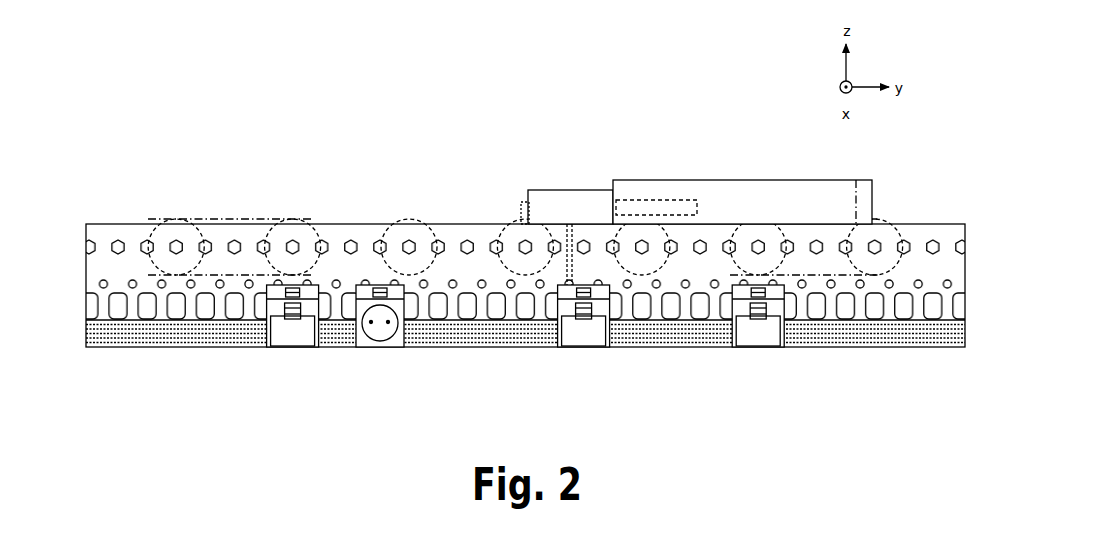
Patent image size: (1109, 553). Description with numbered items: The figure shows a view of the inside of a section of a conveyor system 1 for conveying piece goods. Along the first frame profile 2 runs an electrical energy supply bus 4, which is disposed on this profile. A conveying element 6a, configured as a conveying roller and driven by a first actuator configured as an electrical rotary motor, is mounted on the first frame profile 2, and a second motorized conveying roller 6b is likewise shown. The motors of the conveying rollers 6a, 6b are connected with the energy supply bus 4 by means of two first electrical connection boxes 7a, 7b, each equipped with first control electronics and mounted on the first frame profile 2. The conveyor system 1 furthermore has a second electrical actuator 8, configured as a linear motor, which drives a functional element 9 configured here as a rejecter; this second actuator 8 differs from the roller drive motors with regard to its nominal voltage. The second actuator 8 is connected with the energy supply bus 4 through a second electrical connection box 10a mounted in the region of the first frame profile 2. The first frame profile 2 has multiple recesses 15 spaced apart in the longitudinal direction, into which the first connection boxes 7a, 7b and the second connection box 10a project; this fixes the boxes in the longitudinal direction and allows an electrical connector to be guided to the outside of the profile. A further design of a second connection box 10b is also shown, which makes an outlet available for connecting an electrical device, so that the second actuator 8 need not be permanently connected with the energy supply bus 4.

The conveyor system 1 is at (180, 153).
The first frame profile 2 is at (128, 228).
The electrical energy supply bus 4 is at (152, 333).
The conveying element 6a is at (305, 222).
The second motorized conveying roller 6b is at (748, 223).
The first electrical connection box 7a is at (291, 335).
The first electrical connection box 7b is at (755, 333).
The second electrical actuator 8 is at (580, 202).
The functional element 9 is at (860, 198).
The second electrical connection box 10a is at (582, 333).
The second connection box 10b is at (386, 333).
The recesses 15 is at (877, 308).